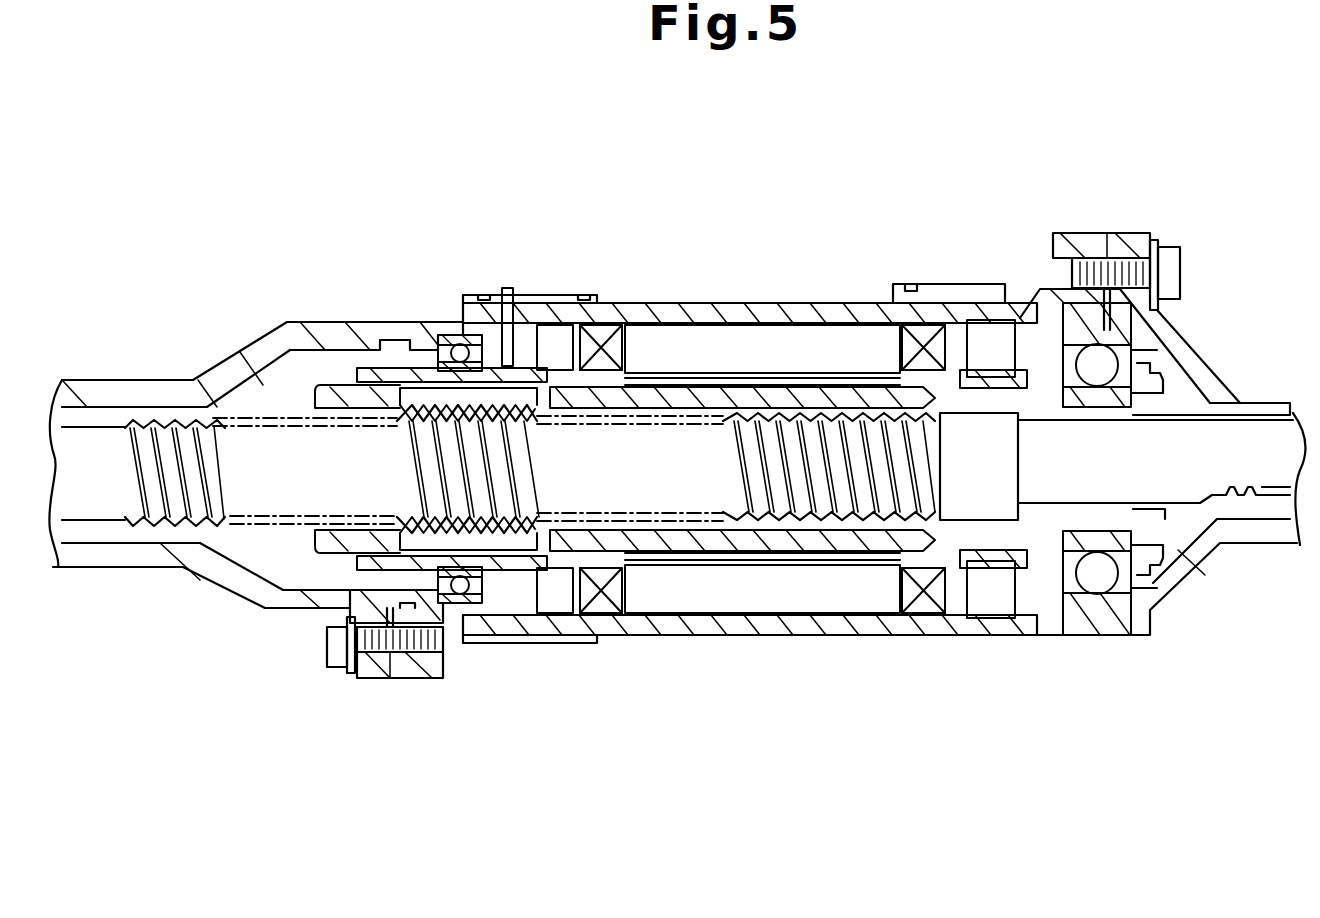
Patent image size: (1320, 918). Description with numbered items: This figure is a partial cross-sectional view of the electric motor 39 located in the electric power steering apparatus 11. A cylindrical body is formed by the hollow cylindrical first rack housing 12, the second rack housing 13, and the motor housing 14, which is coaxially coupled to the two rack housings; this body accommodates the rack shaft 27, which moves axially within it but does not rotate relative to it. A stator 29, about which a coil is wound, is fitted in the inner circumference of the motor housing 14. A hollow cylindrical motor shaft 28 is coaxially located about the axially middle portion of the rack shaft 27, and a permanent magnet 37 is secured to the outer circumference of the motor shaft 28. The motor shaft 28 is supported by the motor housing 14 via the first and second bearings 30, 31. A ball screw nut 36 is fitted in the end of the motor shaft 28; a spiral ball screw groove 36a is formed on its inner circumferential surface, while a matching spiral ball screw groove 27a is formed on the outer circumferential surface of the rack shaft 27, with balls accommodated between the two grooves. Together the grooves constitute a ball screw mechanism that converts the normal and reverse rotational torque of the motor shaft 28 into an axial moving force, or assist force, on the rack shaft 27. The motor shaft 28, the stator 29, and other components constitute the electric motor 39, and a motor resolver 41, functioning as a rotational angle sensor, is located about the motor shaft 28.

The electric power steering apparatus 11 is at (1192, 142).
The first rack housing 12 is at (1210, 357).
The second rack housing 13 is at (240, 352).
The motor housing 14 is at (627, 305).
The rack shaft 27 is at (237, 522).
The ball screw groove 27a is at (134, 415).
The motor shaft 28 is at (808, 388).
The stator 29 is at (683, 332).
The first bearing 30 is at (463, 590).
The second bearing 31 is at (1140, 600).
The ball screw nut 36 is at (490, 555).
The ball screw groove 36a is at (353, 400).
The permanent magnet 37 is at (735, 386).
The electric motor 39 is at (780, 291).
The motor resolver 41 is at (1003, 587).